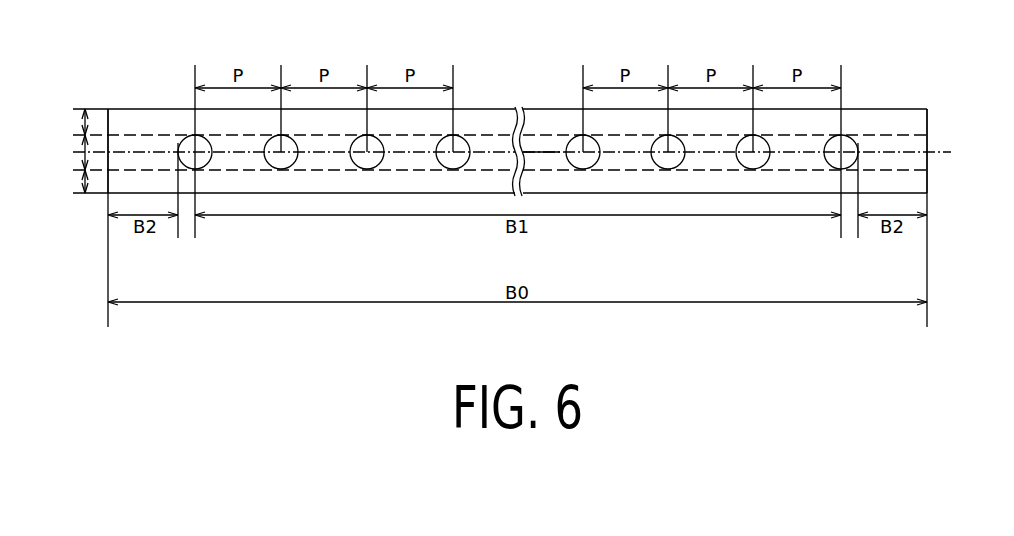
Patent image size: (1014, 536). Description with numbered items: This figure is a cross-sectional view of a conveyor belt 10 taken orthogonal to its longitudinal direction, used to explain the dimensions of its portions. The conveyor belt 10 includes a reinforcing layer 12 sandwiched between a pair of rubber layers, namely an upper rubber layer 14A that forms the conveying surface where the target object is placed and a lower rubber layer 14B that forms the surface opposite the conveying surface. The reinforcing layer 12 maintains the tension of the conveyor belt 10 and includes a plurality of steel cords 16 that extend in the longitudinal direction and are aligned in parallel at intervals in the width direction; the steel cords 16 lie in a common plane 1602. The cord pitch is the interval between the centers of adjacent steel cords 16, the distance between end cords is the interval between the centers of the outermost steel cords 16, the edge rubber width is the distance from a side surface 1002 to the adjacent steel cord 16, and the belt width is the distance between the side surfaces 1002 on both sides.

The conveyor belt 10 is at (500, 128).
The reinforcing layer 12 is at (81, 153).
The upper rubber layer 14A is at (76, 125).
The lower rubber layer 14B is at (76, 183).
The steel cords 16 is at (182, 140).
The side surface 1002 is at (108, 128).
The plane 1602 is at (538, 152).